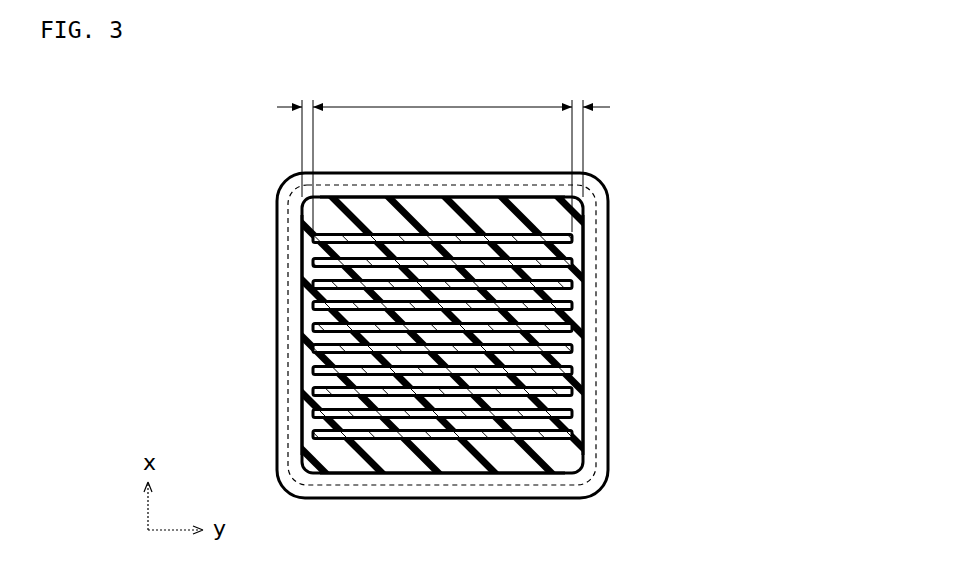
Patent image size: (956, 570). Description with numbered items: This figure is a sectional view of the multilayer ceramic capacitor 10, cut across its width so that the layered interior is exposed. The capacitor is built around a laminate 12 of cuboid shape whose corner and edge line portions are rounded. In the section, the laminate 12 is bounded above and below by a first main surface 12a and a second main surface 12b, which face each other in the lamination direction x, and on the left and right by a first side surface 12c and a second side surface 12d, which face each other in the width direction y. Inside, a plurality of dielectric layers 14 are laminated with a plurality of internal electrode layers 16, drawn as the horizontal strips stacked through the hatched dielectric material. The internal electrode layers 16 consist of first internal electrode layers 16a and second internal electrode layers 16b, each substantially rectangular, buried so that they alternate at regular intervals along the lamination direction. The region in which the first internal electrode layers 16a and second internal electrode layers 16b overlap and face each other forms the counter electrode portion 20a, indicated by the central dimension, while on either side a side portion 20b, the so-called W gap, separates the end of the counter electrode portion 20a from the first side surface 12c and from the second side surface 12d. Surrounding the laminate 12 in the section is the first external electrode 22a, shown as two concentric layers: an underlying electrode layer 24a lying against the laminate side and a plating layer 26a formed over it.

The multilayer ceramic capacitor 10 is at (234, 147).
The laminate 12 is at (465, 285).
The first main surface 12a is at (412, 196).
The second main surface 12b is at (473, 475).
The first side surface 12c is at (303, 346).
The second side surface 12d is at (584, 318).
The dielectric layers 14 is at (405, 398).
The internal electrode layers 16 is at (465, 285).
The first internal electrode layers 16a is at (313, 237).
The second internal electrode layers 16b is at (568, 261).
The counter electrode portion 20a is at (442, 150).
The side portion 20b is at (443, 133).
The first external electrode 22a is at (544, 335).
The underlying electrode layer 24a is at (590, 245).
The plating layer 26a is at (598, 226).